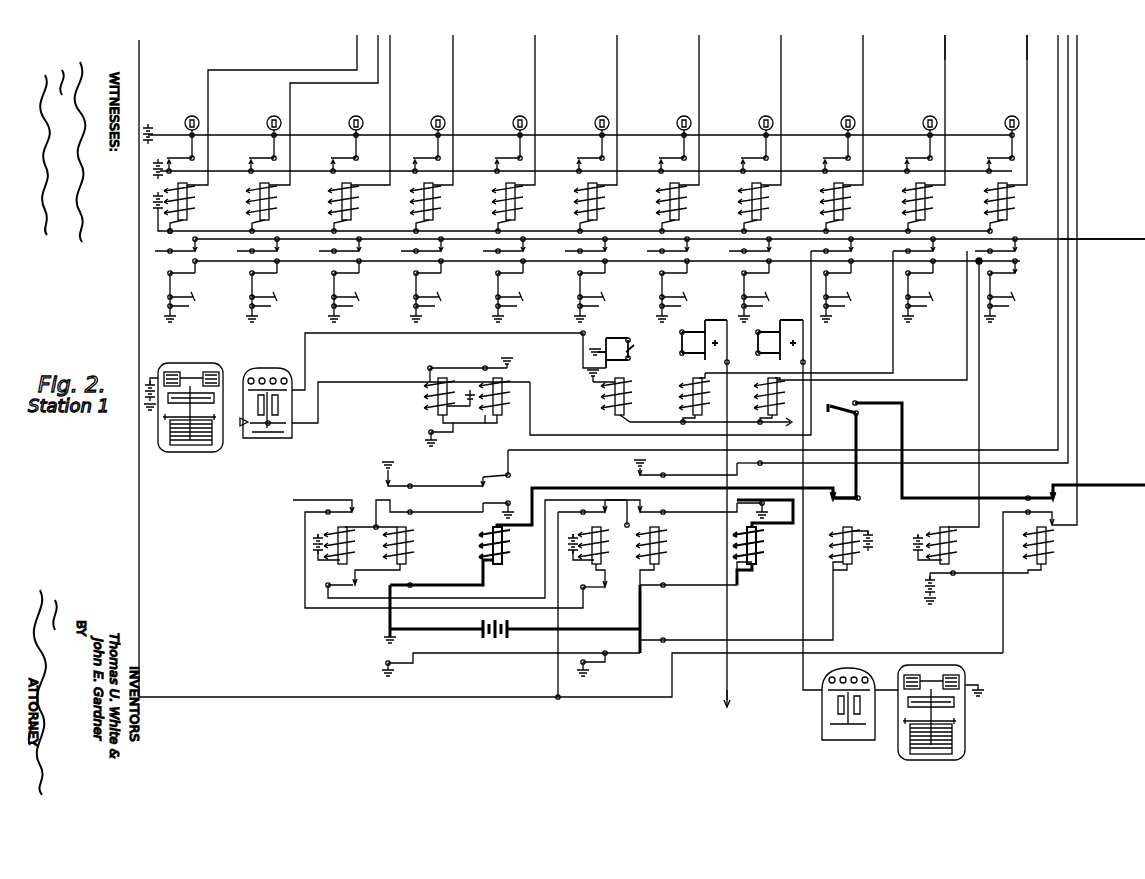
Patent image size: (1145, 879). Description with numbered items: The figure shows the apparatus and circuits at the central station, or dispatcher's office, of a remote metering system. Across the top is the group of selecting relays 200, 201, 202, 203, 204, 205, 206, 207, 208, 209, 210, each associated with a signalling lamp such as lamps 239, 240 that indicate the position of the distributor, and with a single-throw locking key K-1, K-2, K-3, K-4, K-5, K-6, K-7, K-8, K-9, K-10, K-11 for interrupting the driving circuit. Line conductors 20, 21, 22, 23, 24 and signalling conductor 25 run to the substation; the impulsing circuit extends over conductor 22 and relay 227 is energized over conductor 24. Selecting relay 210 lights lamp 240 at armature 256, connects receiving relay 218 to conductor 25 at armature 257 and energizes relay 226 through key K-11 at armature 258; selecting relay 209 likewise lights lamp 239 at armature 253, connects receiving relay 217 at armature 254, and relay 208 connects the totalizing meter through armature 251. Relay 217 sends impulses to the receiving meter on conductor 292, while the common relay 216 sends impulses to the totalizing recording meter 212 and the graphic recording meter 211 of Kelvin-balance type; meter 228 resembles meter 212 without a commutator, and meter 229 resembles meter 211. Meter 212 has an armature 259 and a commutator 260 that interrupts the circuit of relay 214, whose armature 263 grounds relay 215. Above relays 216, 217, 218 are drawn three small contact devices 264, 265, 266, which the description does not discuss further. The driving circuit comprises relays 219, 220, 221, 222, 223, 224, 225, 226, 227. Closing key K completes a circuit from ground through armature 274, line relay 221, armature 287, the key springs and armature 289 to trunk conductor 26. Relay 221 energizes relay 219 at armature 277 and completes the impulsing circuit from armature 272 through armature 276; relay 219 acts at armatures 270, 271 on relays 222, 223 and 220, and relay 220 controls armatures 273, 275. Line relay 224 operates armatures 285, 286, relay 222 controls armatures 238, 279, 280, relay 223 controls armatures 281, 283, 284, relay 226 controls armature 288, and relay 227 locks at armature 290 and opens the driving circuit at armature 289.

The conductor 20 is at (945, 46).
The conductor 21 is at (1027, 46).
The conductor 22 is at (1058, 47).
The conductor 23 is at (1068, 46).
The conductor 24 is at (1077, 68).
The signalling conductor 25 is at (1130, 239).
The trunk conductor 26 is at (1118, 484).
The selecting relay 200 is at (188, 210).
The selecting relay 201 is at (270, 210).
The selecting relay 202 is at (352, 210).
The selecting relay 203 is at (434, 210).
The selecting relay 204 is at (516, 210).
The selecting relay 205 is at (598, 210).
The selecting relay 206 is at (680, 210).
The selecting relay 207 is at (762, 210).
The selecting relay 208 is at (844, 210).
The selecting relay 209 is at (926, 210).
The selecting relay 210 is at (1008, 210).
The graphic recording meter 211 is at (192, 363).
The receiving meter 212 is at (268, 368).
The relay 214 is at (436, 400).
The relay 215 is at (500, 416).
The relay 216 is at (614, 405).
The receiving relay 217 is at (692, 402).
The receiving relay 218 is at (768, 405).
The relay 219 is at (346, 552).
The relay 220 is at (406, 554).
The line relay 221 is at (505, 548).
The relay 222 is at (600, 552).
The relay 223 is at (658, 552).
The line relay 224 is at (758, 548).
The relay 225 is at (850, 527).
The relay 226 is at (940, 527).
The relay 227 is at (1050, 552).
The meter 228 is at (855, 670).
The meter 229 is at (968, 668).
The armature 238 is at (597, 510).
The signalling lamp 239 is at (928, 115).
The signalling lamp 240 is at (1010, 115).
The armature 251 is at (853, 250).
The armature 253 is at (912, 152).
The armature 254 is at (935, 250).
The armature 256 is at (994, 152).
The armature 257 is at (1008, 249).
The armature 258 is at (1017, 272).
The armature 259 is at (305, 385).
The commutator 260 is at (266, 438).
The armature 263 is at (444, 445).
The relay 264 is at (628, 346).
The relay 265 is at (684, 345).
The relay 266 is at (766, 349).
The armature 270 is at (335, 500).
The armature 271 is at (345, 600).
The armature 272 is at (410, 486).
The armature 273 is at (412, 511).
The armature 274 is at (410, 585).
The armature 275 is at (412, 663).
The armature 276 is at (505, 474).
The armature 277 is at (512, 496).
The armature 279 is at (607, 590).
The armature 280 is at (602, 668).
The armature 281 is at (664, 471).
The armature 283 is at (656, 585).
The armature 284 is at (656, 640).
The armature 285 is at (690, 466).
The armature 286 is at (765, 505).
The armature 287 is at (850, 497).
The armature 288 is at (954, 580).
The armature 289 is at (1028, 496).
The armature 290 is at (1028, 516).
The conductor 292 is at (730, 692).
The key K is at (857, 402).
The key K-1 is at (182, 312).
The key K-2 is at (275, 300).
The key K-3 is at (357, 300).
The key K-4 is at (439, 300).
The key K-5 is at (521, 300).
The key K-6 is at (603, 300).
The key K-7 is at (685, 300).
The key K-8 is at (767, 300).
The key K-9 is at (849, 300).
The key K-10 is at (931, 300).
The key K-11 is at (1013, 300).